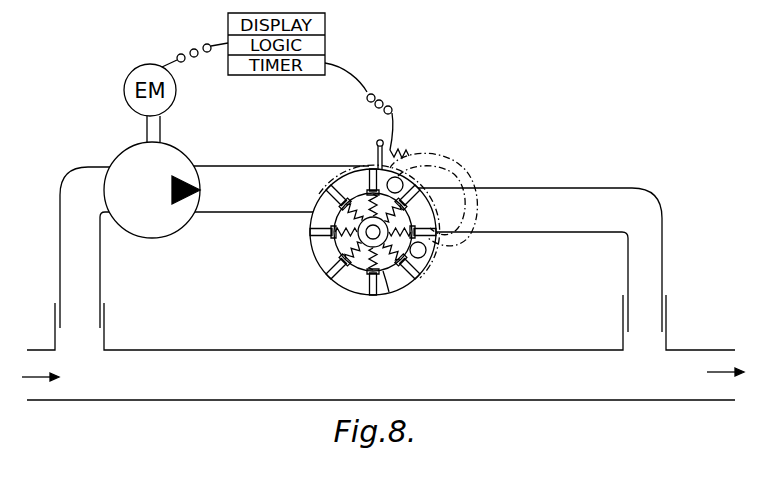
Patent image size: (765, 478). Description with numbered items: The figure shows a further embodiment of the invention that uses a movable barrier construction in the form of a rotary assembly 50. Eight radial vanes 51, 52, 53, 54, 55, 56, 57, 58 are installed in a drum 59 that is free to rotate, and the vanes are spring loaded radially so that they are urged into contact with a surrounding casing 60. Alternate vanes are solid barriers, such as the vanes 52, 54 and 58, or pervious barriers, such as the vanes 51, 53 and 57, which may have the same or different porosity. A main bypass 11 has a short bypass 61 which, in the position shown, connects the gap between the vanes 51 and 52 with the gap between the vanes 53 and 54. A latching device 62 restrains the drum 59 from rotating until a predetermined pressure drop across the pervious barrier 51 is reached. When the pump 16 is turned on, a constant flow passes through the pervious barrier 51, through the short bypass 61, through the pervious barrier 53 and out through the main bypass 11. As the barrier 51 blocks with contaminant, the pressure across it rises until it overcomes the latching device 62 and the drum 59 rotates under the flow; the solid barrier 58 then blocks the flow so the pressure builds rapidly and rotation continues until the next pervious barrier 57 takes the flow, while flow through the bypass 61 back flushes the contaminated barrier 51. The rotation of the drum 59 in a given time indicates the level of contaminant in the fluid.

The main bypass 11 is at (602, 196).
The pump 16 is at (126, 146).
The rotary assembly 50 is at (416, 152).
The pervious barrier vane 51 is at (364, 170).
The solid barrier vane 52 is at (416, 199).
The pervious barrier vane 53 is at (437, 244).
The solid barrier vane 54 is at (414, 278).
The radial vane 55 is at (371, 297).
The radial vane 56 is at (326, 266).
The pervious barrier vane 57 is at (310, 245).
The solid barrier vane 58 is at (326, 195).
The drum 59 is at (399, 292).
The casing 60 is at (342, 290).
The short bypass 61 is at (470, 183).
The latching device 62 is at (377, 141).